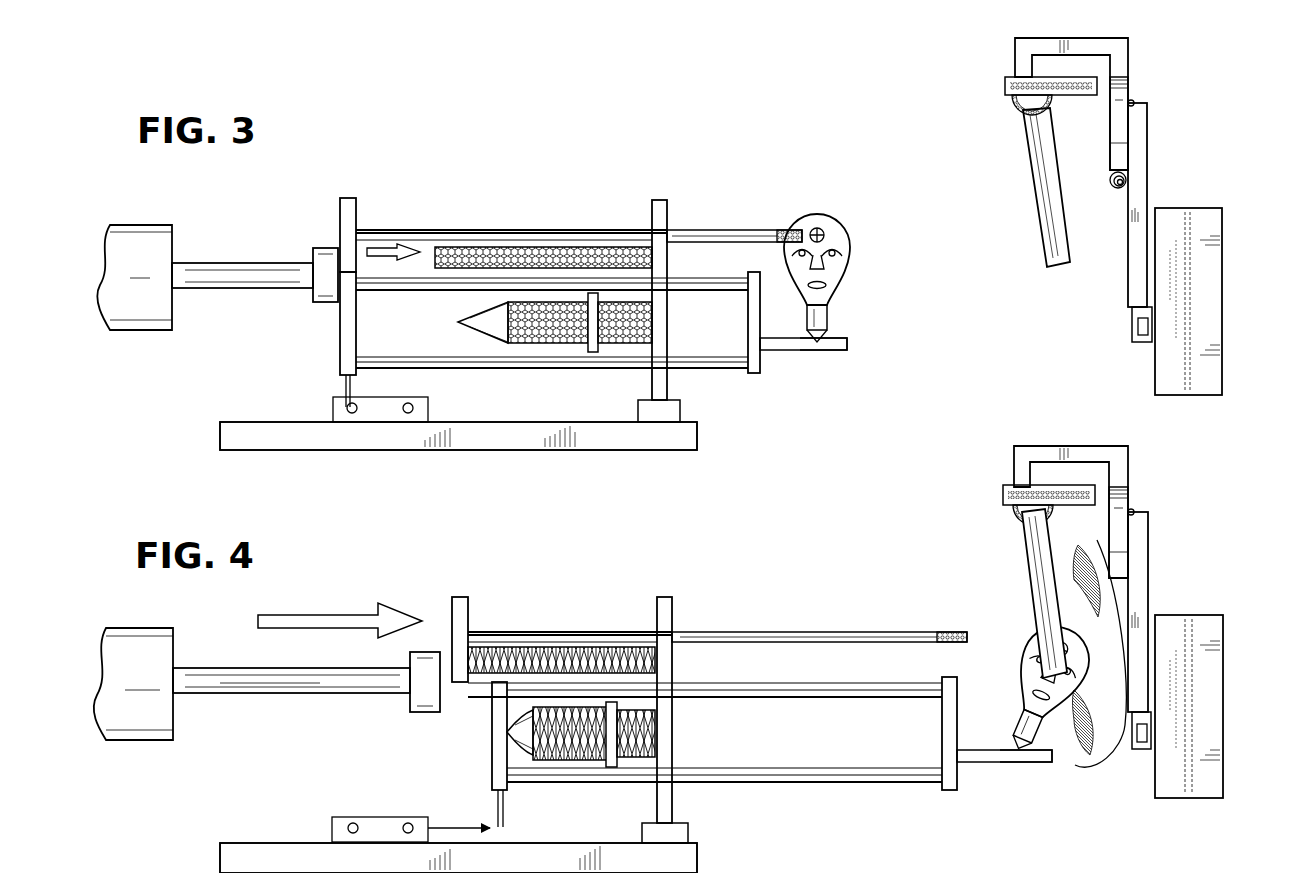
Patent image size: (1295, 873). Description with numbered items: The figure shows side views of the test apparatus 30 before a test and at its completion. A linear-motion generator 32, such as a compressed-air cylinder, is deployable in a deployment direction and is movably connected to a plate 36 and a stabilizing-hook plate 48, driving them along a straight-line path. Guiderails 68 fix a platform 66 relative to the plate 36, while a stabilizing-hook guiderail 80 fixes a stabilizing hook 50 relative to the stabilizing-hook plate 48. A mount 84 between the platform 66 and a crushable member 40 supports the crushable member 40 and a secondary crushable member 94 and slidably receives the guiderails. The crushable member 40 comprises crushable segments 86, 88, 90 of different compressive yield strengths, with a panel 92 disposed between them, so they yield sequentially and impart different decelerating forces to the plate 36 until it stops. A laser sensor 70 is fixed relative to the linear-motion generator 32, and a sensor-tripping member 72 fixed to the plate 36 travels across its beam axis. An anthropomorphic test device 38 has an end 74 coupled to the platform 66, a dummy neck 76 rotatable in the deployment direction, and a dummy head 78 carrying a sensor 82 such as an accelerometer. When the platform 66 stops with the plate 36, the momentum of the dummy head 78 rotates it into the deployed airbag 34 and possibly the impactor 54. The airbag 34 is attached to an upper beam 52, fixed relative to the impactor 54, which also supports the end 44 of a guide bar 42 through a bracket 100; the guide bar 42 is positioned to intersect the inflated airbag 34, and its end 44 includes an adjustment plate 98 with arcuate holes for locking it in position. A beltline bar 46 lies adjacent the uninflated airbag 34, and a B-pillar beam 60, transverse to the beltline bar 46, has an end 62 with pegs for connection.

In FIG. 3, the test apparatus 30 is at (400, 160).
In FIG. 4, the test apparatus 30 is at (401, 582).
In FIG. 3, the linear-motion generator 32 is at (138, 225).
In FIG. 4, the linear-motion generator 32 is at (137, 628).
In FIG. 3, the airbag 34 is at (1114, 189).
In FIG. 4, the airbag 34 is at (1092, 770).
In FIG. 3, the plate 36 is at (340, 344).
In FIG. 4, the plate 36 is at (492, 769).
In FIG. 3, the anthropomorphic test device 38 is at (842, 250).
In FIG. 4, the anthropomorphic test device 38 is at (994, 685).
In FIG. 3, the crushable member 40 is at (555, 357).
In FIG. 4, the crushable member 40 is at (581, 772).
In FIG. 3, the guide bar 42 is at (1060, 270).
In FIG. 4, the guide bar 42 is at (1062, 673).
In FIG. 3, the end 44 is at (1050, 100).
In FIG. 4, the end 44 is at (1008, 516).
In FIG. 3, the beltline bar 46 is at (1141, 342).
In FIG. 4, the beltline bar 46 is at (1142, 750).
In FIG. 3, the stabilizing-hook plate 48 is at (357, 212).
In FIG. 4, the stabilizing-hook plate 48 is at (468, 612).
In FIG. 3, the stabilizing hook 50 is at (785, 232).
In FIG. 4, the stabilizing hook 50 is at (945, 632).
In FIG. 3, the upper beam 52 is at (1130, 84).
In FIG. 4, the upper beam 52 is at (1130, 492).
In FIG. 3, the impactor 54 is at (1222, 285).
In FIG. 4, the impactor 54 is at (1223, 692).
In FIG. 3, the B-pillar beam 60 is at (1128, 255).
In FIG. 4, the B-pillar beam 60 is at (1148, 590).
In FIG. 3, the end 62 is at (1110, 346).
In FIG. 4, the end 62 is at (1108, 765).
In FIG. 3, the platform 66 is at (783, 351).
In FIG. 4, the platform 66 is at (1020, 763).
In FIG. 3, the guiderails 68 is at (417, 353).
In FIG. 4, the guiderails 68 is at (512, 762).
In FIG. 3, the laser sensor 70 is at (386, 424).
In FIG. 4, the laser sensor 70 is at (368, 817).
In FIG. 3, the sensor-tripping member 72 is at (346, 389).
In FIG. 4, the sensor-tripping member 72 is at (498, 806).
In FIG. 3, the end 74 is at (829, 351).
In FIG. 4, the end 74 is at (1003, 763).
In FIG. 3, the dummy neck 76 is at (848, 317).
In FIG. 4, the dummy neck 76 is at (962, 699).
In FIG. 3, the dummy head 78 is at (846, 262).
In FIG. 4, the dummy head 78 is at (1009, 651).
In FIG. 3, the stabilizing-hook guiderail 80 is at (578, 232).
In FIG. 4, the stabilizing-hook guiderail 80 is at (606, 632).
In FIG. 3, the sensor 82 is at (805, 200).
In FIG. 4, the sensor 82 is at (1033, 615).
In FIG. 3, the mount 84 is at (662, 200).
In FIG. 4, the mount 84 is at (665, 597).
In FIG. 3, the crushable segment 86 is at (484, 338).
In FIG. 4, the crushable segment 86 is at (528, 758).
In FIG. 3, the crushable segment 88 is at (556, 344).
In FIG. 4, the crushable segment 88 is at (560, 762).
In FIG. 3, the crushable segment 90 is at (625, 350).
In FIG. 4, the crushable segment 90 is at (633, 764).
In FIG. 3, the panel 92 is at (592, 353).
In FIG. 4, the panel 92 is at (612, 768).
In FIG. 3, the secondary crushable member 94 is at (510, 247).
In FIG. 4, the secondary crushable member 94 is at (552, 647).
In FIG. 3, the adjustment plate 98 is at (1022, 101).
In FIG. 4, the adjustment plate 98 is at (1026, 510).
In FIG. 3, the bracket 100 is at (1035, 38).
In FIG. 4, the bracket 100 is at (1034, 446).